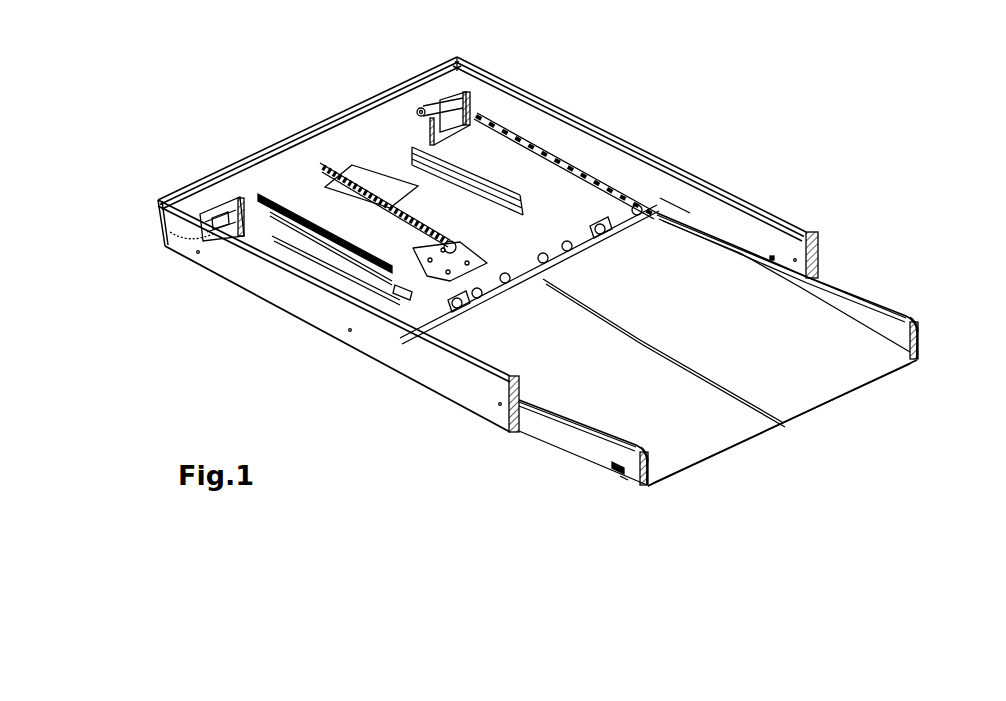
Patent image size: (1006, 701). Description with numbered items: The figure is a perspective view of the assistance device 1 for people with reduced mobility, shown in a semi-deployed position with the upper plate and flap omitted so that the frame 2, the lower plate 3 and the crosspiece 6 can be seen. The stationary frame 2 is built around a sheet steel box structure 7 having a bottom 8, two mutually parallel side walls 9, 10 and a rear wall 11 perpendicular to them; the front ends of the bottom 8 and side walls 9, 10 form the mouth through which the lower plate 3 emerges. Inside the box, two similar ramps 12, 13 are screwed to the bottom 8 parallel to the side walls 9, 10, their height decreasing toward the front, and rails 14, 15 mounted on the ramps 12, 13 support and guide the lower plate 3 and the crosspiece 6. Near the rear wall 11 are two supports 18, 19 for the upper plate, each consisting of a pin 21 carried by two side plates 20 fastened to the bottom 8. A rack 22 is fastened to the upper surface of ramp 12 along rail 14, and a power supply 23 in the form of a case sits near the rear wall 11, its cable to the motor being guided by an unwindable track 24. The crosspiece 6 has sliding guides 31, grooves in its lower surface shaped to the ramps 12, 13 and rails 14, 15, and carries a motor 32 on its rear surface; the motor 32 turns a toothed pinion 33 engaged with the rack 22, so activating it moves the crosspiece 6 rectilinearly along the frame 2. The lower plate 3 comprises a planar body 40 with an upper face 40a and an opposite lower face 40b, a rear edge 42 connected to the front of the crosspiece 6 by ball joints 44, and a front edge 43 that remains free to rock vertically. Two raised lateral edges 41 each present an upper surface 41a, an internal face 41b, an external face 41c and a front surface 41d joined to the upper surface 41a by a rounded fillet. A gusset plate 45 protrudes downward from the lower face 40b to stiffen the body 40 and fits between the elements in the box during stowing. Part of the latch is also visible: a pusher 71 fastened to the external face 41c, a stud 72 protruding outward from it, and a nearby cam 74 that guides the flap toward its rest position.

The assistance device 1 is at (260, 96).
The frame 2 is at (203, 267).
The lower plate 3 is at (705, 434).
The crosspiece 6 is at (380, 291).
The box structure 7 is at (303, 125).
The bottom 8 is at (543, 108).
The side wall 9 is at (400, 356).
The side wall 10 is at (713, 201).
The rear wall 11 is at (400, 101).
The ramp 12 is at (303, 241).
The ramp 13 is at (380, 172).
The rail 14 is at (318, 276).
The rail 15 is at (560, 186).
The support 18 is at (213, 199).
The support 19 is at (470, 108).
The side plate 20 is at (170, 232).
The pin 21 is at (197, 206).
The rack 22 is at (314, 198).
The power supply 23 is at (365, 192).
The unwindable track 24 is at (362, 206).
The sliding guide 31 is at (464, 306).
The motor 32 is at (427, 250).
The pinion 33 is at (402, 288).
The body 40 is at (748, 422).
The upper face 40a is at (656, 343).
The lower face 40b is at (666, 463).
The raised lateral edge 41 is at (560, 438).
The upper surface 41a is at (585, 419).
The internal face 41b is at (846, 309).
The external face 41c is at (593, 451).
The front surface 41d is at (662, 456).
The rear edge 42 is at (523, 263).
The front edge 43 is at (863, 389).
The ball joint 44 is at (453, 302).
The gusset plate 45 is at (661, 353).
The pusher 71 is at (625, 441).
The stud 72 is at (611, 466).
The cam 74 is at (624, 481).